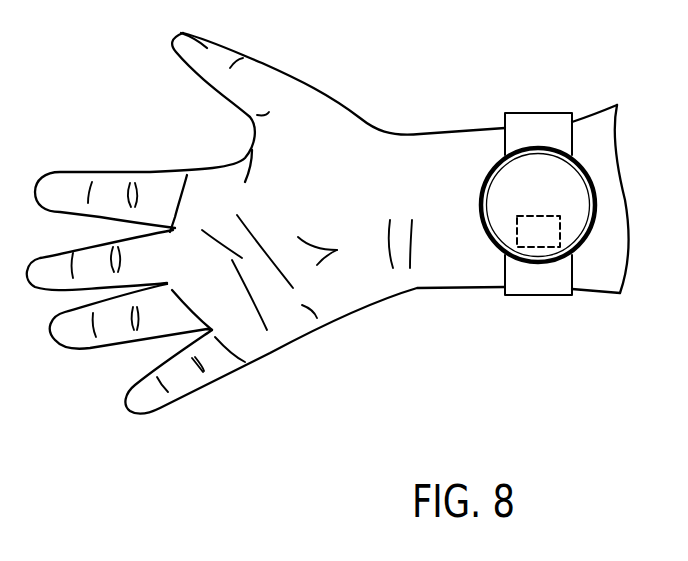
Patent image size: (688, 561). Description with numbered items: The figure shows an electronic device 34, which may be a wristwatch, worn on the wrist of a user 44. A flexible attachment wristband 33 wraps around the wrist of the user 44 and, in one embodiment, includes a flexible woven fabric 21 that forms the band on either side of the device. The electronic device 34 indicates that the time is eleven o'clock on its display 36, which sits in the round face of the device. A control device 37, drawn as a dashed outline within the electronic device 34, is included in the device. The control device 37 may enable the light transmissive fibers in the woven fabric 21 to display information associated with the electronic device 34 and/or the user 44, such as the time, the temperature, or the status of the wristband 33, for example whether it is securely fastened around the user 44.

The woven fabric 21 is at (520, 128).
The flexible attachment wristband 33 is at (570, 166).
The electronic device 34 is at (581, 164).
The display 36 is at (577, 228).
The control device 37 is at (519, 238).
The user 44 is at (416, 146).